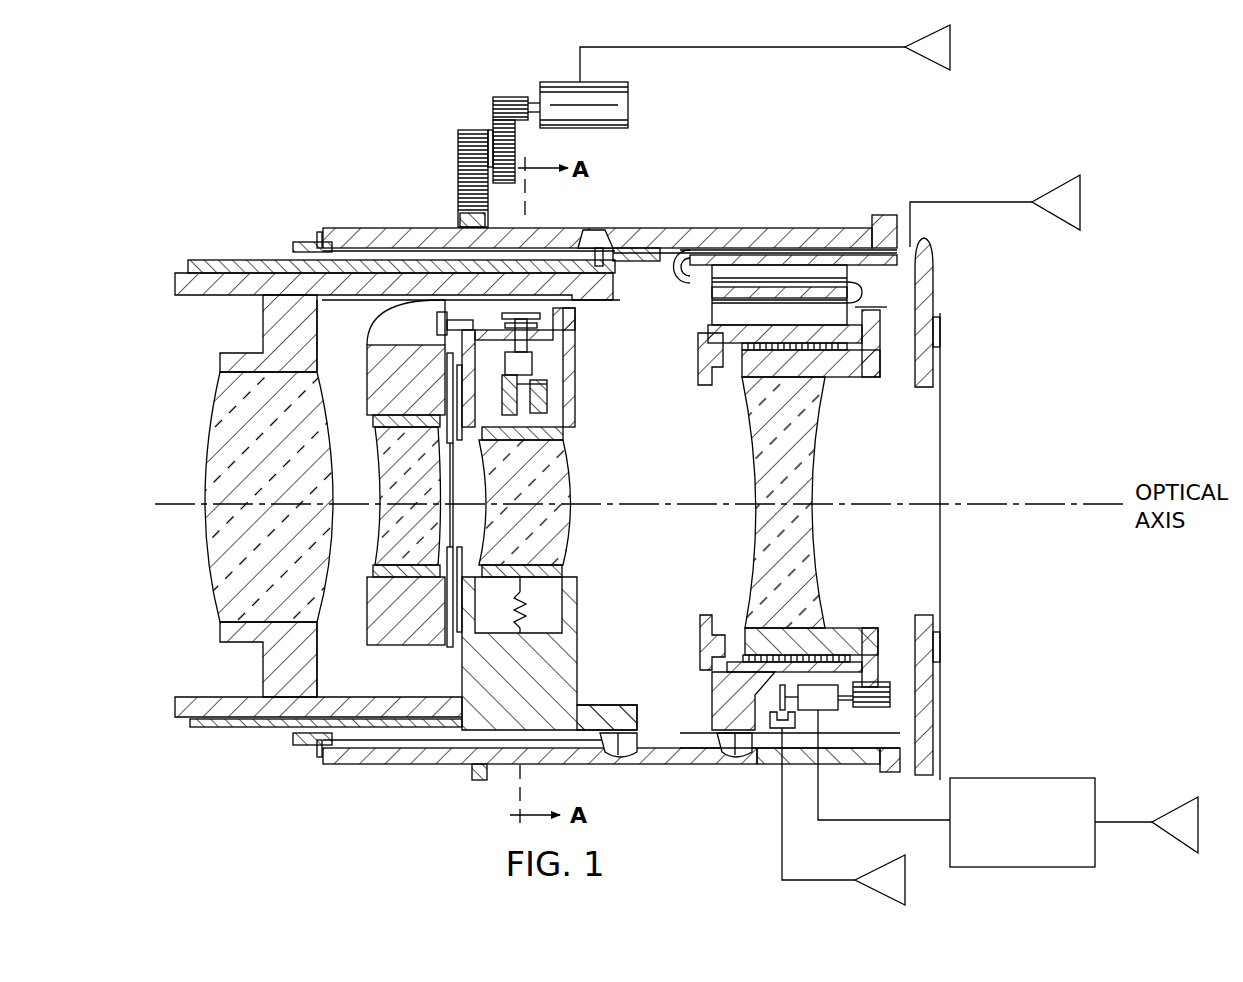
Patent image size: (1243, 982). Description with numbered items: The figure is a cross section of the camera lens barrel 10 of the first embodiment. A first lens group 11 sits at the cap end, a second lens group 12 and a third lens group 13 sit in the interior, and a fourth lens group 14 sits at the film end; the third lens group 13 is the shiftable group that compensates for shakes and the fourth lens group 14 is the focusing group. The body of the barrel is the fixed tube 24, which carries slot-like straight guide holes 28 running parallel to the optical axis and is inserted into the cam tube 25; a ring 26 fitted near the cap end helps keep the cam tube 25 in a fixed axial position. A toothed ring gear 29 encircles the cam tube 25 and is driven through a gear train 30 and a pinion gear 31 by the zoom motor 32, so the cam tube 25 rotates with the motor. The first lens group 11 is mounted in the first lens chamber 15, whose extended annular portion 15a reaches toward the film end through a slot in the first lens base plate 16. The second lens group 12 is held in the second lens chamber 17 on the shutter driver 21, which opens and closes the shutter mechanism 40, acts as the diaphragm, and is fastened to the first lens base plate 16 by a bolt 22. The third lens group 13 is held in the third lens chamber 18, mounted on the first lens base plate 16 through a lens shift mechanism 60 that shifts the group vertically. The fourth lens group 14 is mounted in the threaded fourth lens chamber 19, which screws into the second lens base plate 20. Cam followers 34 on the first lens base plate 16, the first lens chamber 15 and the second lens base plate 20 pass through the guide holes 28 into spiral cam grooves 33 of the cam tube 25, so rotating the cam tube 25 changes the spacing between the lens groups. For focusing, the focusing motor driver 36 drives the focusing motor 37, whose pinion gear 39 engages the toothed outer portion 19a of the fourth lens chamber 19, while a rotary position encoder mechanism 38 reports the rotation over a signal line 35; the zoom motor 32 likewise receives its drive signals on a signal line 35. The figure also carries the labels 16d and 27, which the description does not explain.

The camera lens barrel 10 is at (205, 140).
The first lens group 11 is at (215, 580).
The second lens group 12 is at (392, 470).
The third lens group 13 is at (570, 528).
The fourth lens group 14 is at (810, 580).
The first lens chamber 15 is at (210, 283).
The extended annular portion 15a is at (326, 318).
The first lens base plate 16 is at (578, 332).
The housing plate 16d is at (205, 262).
The second lens chamber 17 is at (378, 421).
The third lens chamber 18 is at (565, 432).
The fourth lens chamber 19 is at (878, 378).
The toothed outer portion 19a is at (941, 333).
The second lens base plate 20 is at (830, 330).
The shutter driver 21 is at (375, 385).
The bolt 22 is at (458, 312).
The fixed tube 24 is at (298, 243).
The cam tube 25 is at (337, 230).
The ring 26 is at (318, 236).
The mounting flange 27 is at (925, 330).
The straight guide holes 28 is at (440, 262).
The toothed ring gear 29 is at (462, 225).
The gear train 30 is at (517, 80).
The pinion gear 31 is at (520, 122).
The zoom motor 32 is at (628, 108).
The cam groove 33 is at (598, 230).
The cam follower 34 is at (650, 240).
The signal line 35 is at (745, 47).
The focusing motor driver 36 is at (1095, 785).
The focusing motor 37 is at (838, 705).
The rotary position encoder mechanism 38 is at (800, 740).
The pinion gear 39 is at (890, 700).
The shutter mechanism 40 is at (447, 518).
The lens shift mechanism 60 is at (548, 372).